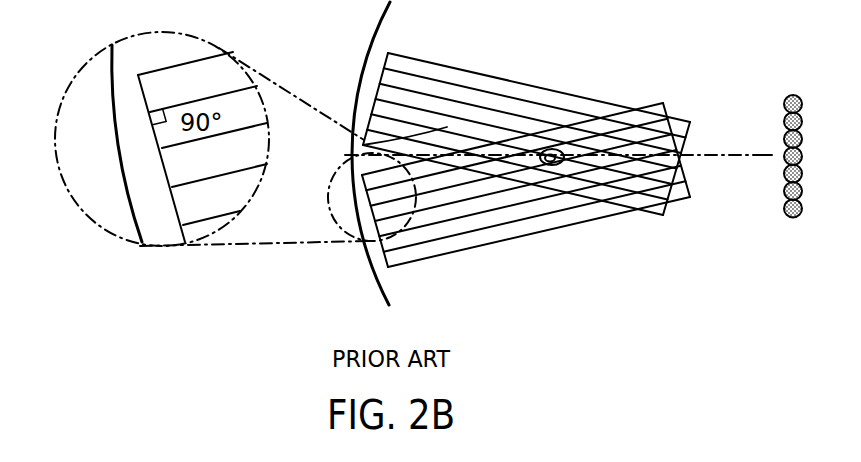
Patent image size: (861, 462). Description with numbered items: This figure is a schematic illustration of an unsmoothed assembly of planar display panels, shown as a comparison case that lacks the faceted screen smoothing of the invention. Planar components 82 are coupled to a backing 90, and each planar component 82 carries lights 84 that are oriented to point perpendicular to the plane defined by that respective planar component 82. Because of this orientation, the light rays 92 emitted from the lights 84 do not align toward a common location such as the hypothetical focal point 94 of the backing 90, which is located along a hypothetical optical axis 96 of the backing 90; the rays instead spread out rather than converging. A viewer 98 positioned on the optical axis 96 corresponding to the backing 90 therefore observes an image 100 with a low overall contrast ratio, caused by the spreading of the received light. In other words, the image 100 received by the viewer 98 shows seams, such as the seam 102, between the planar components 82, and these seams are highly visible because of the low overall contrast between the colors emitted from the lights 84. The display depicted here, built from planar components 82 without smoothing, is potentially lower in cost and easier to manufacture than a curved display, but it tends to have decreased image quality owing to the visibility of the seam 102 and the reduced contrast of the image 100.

The planar component 82 is at (526, 118).
The light 84 is at (378, 87).
The backing 90 is at (362, 76).
The light ray 92 is at (538, 88).
The hypothetical focal point 94 is at (679, 155).
The optical axis 96 is at (763, 155).
The viewer 98 is at (553, 167).
The image 100 is at (781, 125).
The seam 102 is at (366, 163).